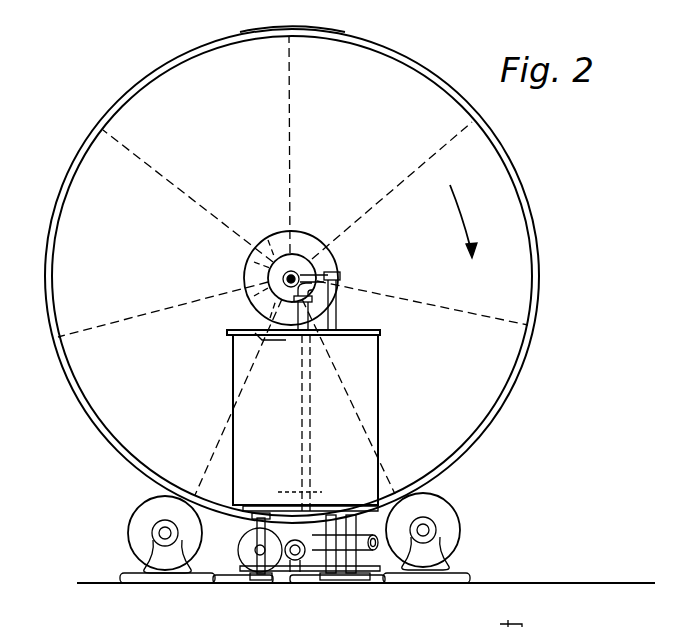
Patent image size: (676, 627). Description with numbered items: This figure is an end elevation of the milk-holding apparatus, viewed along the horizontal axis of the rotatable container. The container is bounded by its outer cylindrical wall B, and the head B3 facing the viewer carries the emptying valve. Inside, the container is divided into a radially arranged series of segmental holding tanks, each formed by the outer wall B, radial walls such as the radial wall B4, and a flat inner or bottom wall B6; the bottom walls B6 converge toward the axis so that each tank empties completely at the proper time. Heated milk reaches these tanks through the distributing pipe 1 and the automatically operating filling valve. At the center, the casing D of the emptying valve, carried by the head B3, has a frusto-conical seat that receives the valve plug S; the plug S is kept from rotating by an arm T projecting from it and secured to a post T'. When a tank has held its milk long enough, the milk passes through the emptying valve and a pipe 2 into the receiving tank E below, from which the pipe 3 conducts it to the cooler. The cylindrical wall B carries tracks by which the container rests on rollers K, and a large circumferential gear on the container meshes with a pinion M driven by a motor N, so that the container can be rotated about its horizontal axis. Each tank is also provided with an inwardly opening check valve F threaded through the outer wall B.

The distributing pipe 1 is at (276, 30).
The outer cylindrical wall B is at (167, 74).
The head B3 is at (420, 223).
The radial wall B4 is at (162, 333).
The inner or bottom wall B6 is at (253, 314).
The emptying valve casing D is at (312, 240).
The valve plug S is at (268, 275).
The arm T is at (330, 284).
The post T' is at (331, 308).
The pipe 2 is at (298, 334).
The receiving tank E is at (303, 421).
The rollers K is at (130, 529).
The motor N is at (240, 551).
The pipe 3 is at (362, 542).
The pinion M is at (313, 585).
The check valve F is at (514, 626).